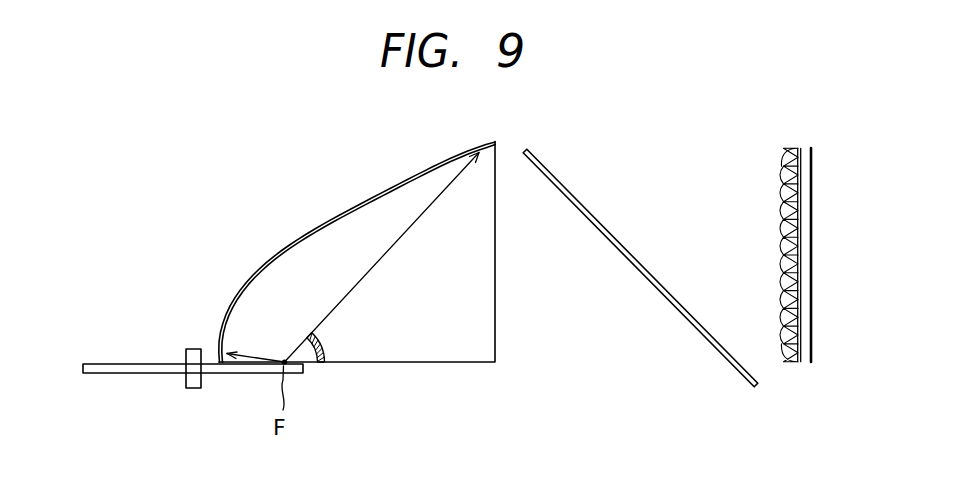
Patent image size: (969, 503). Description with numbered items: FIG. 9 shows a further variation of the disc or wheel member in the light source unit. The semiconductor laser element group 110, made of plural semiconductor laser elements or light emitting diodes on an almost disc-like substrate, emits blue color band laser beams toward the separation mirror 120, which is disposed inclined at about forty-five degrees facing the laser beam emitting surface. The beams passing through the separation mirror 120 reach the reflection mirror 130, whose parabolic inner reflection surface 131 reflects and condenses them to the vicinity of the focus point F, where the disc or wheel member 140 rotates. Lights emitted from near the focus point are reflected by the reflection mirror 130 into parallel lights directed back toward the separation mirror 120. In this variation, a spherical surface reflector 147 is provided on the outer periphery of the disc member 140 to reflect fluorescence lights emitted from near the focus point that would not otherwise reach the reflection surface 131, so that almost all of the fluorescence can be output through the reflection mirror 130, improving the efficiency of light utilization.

The semiconductor laser element group 110 is at (795, 147).
The separation mirror 120 is at (632, 253).
The reflection mirror (reflector) 130 is at (349, 207).
The reflection mirror surface 131 is at (266, 276).
The disc (or wheel) member 140 is at (140, 375).
The spherical surface reflection mirror (spherical surface reflector) 147 is at (320, 357).